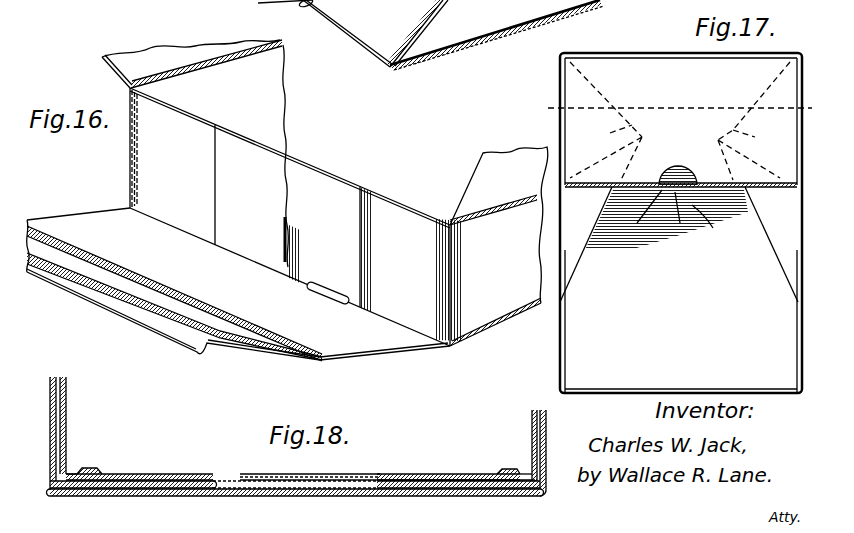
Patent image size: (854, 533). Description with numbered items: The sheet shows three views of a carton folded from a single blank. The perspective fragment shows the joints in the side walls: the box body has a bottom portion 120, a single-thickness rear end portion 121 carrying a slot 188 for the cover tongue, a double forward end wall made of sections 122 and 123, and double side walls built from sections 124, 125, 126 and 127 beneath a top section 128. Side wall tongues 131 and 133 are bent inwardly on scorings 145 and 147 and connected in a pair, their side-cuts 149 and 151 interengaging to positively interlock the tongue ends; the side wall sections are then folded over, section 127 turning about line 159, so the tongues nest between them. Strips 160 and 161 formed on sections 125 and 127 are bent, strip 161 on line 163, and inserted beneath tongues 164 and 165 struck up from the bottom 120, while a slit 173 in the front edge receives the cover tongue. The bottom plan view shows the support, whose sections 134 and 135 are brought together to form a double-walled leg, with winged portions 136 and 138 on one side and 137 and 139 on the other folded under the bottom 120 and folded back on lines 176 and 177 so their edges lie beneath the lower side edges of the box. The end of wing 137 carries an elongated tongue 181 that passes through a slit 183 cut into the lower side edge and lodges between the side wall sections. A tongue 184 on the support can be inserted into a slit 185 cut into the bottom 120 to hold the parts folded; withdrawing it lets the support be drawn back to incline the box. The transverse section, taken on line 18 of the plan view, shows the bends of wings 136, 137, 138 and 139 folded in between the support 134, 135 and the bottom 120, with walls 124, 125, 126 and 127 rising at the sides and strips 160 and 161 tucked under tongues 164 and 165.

In FIG. 17, the section line 18 is at (671, 108).
In FIG. 17, the bottom portion 120 is at (680, 297).
In FIG. 18, the bottom portion 120 is at (305, 478).
In FIG. 16, the rear end portion 121 is at (191, 75).
In FIG. 16, the forward end wall section 122 is at (491, 225).
In FIG. 16, the forward end wall section 123 is at (495, 304).
In FIG. 18, the side wall section 124 is at (546, 420).
In FIG. 18, the side wall section 125 is at (531, 422).
In FIG. 16, the side wall section 126 is at (103, 240).
In FIG. 18, the side wall section 126 is at (50, 420).
In FIG. 16, the side wall section 127 is at (156, 320).
In FIG. 18, the side wall section 127 is at (67, 412).
In FIG. 16, the top section 128 is at (147, 55).
In FIG. 16, the side wall tongue 131 is at (325, 230).
In FIG. 16, the side wall tongue 133 is at (268, 218).
In FIG. 17, the support section 134 is at (677, 203).
In FIG. 18, the support section 134 is at (248, 479).
In FIG. 17, the support section 135 is at (681, 135).
In FIG. 18, the support section 135 is at (290, 497).
In FIG. 17, the winged support section 136 is at (654, 244).
In FIG. 18, the winged support section 136 is at (450, 492).
In FIG. 17, the winged support section 137 is at (771, 244).
In FIG. 18, the winged support section 137 is at (180, 493).
In FIG. 17, the winged support section 138 is at (640, 123).
In FIG. 18, the winged support section 138 is at (408, 480).
In FIG. 17, the winged support section 139 is at (727, 125).
In FIG. 18, the winged support section 139 is at (165, 477).
In FIG. 16, the scoring 145 is at (131, 157).
In FIG. 16, the scoring 147 is at (450, 302).
In FIG. 16, the side-cut 149 is at (292, 202).
In FIG. 16, the side-cut 151 is at (290, 243).
In FIG. 16, the fold line 159 is at (185, 295).
In FIG. 18, the strip 160 is at (520, 472).
In FIG. 16, the strip 161 is at (95, 299).
In FIG. 18, the strip 161 is at (73, 470).
In FIG. 16, the fold line 163 is at (147, 322).
In FIG. 18, the struck-up tongue 164 is at (502, 470).
In FIG. 18, the struck-up tongue 165 is at (92, 470).
In FIG. 16, the slit 173 is at (528, 203).
In FIG. 17, the fold line 176 is at (606, 122).
In FIG. 17, the fold line 177 is at (754, 121).
In FIG. 16, the elongated tongue 181 is at (326, 288).
In FIG. 16, the slit 183 is at (297, 8).
In FIG. 17, the tongue 184 is at (717, 226).
In FIG. 17, the slit 185 is at (637, 216).
In FIG. 16, the slot 188 is at (233, 63).